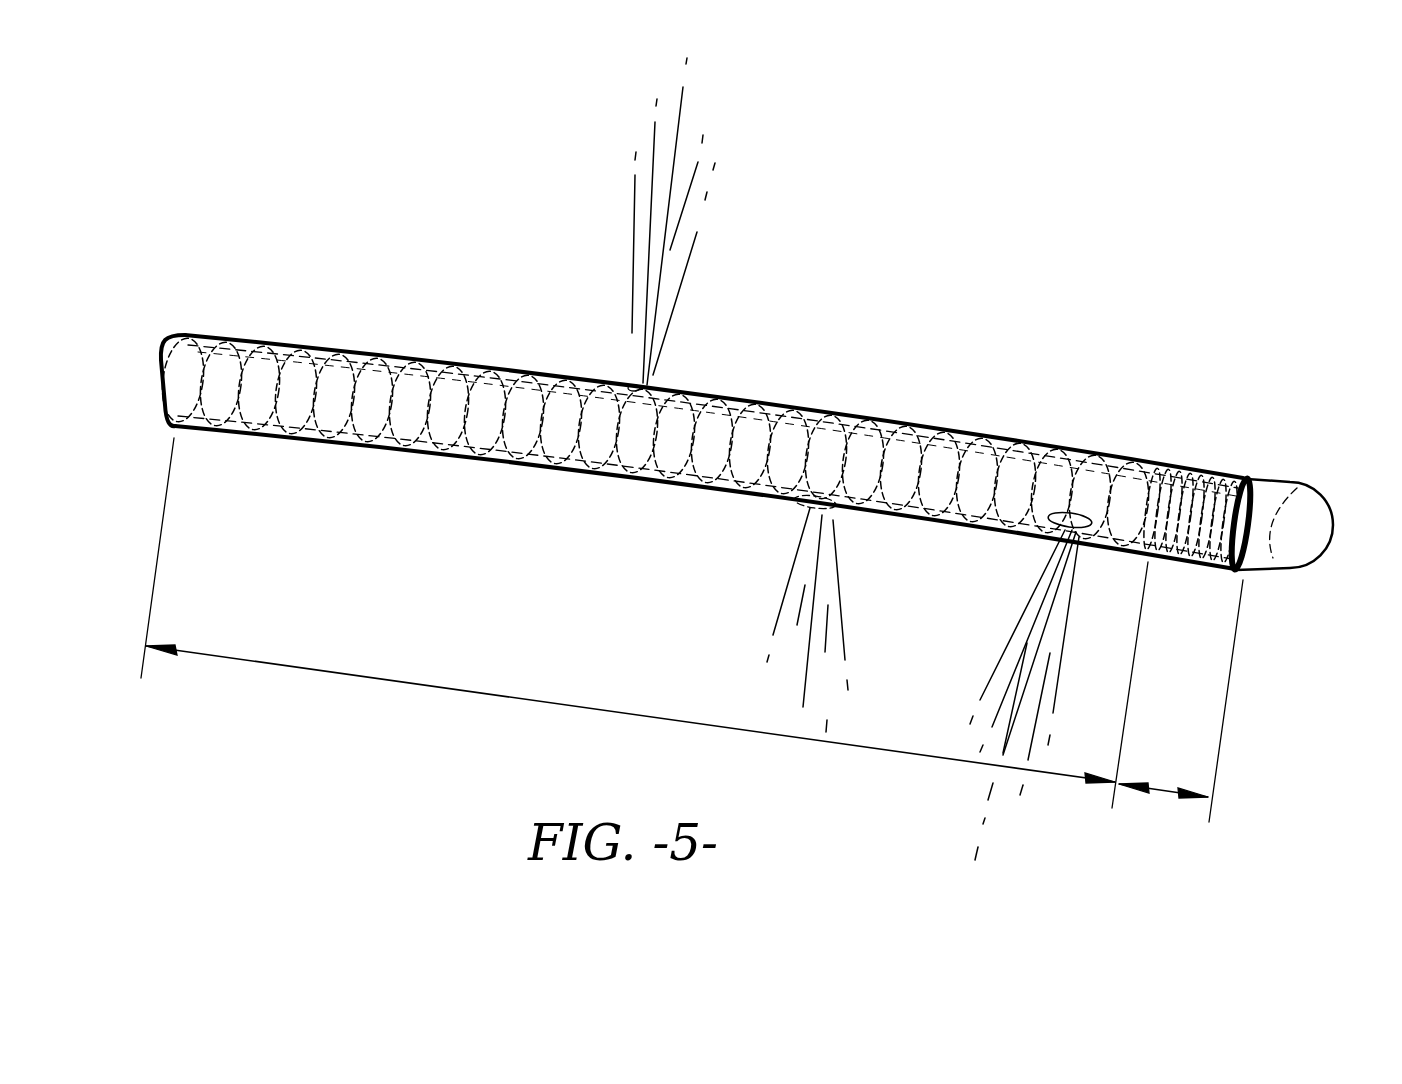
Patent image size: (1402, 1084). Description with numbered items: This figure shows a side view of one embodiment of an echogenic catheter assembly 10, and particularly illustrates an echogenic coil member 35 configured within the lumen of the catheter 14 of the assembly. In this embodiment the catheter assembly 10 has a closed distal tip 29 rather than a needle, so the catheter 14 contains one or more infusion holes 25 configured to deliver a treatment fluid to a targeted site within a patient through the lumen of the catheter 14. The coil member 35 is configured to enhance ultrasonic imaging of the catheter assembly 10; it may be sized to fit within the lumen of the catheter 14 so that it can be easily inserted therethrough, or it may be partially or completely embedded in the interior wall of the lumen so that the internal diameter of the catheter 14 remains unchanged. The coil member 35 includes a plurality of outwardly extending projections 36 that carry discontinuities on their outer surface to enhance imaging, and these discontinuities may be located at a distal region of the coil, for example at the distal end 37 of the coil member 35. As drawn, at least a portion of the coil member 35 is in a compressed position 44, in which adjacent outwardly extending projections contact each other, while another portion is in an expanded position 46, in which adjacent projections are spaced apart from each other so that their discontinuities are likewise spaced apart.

The echogenic catheter assembly 10 is at (1212, 292).
The catheter 14 is at (936, 430).
The infusion holes 25 is at (634, 390).
The closed distal tip 29 is at (1335, 530).
The echogenic coil member 35 is at (436, 398).
The outwardly extending projections 36 is at (617, 474).
The distal end of the coil member 37 is at (1190, 560).
The compressed position 44 is at (1163, 792).
The expanded position 46 is at (495, 697).